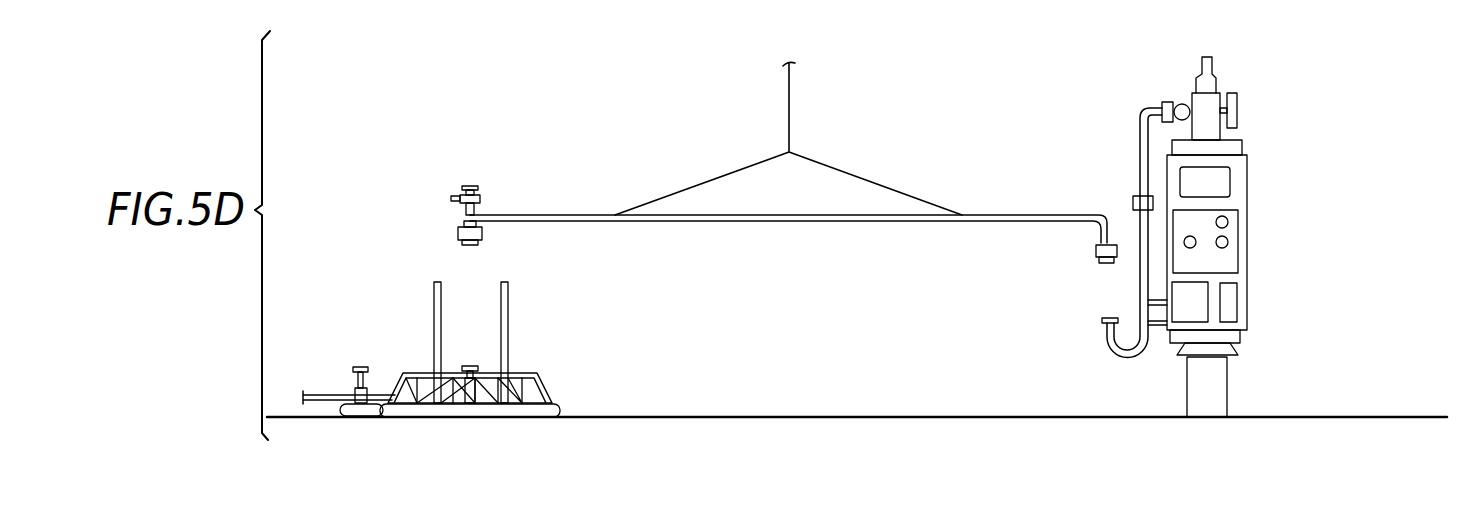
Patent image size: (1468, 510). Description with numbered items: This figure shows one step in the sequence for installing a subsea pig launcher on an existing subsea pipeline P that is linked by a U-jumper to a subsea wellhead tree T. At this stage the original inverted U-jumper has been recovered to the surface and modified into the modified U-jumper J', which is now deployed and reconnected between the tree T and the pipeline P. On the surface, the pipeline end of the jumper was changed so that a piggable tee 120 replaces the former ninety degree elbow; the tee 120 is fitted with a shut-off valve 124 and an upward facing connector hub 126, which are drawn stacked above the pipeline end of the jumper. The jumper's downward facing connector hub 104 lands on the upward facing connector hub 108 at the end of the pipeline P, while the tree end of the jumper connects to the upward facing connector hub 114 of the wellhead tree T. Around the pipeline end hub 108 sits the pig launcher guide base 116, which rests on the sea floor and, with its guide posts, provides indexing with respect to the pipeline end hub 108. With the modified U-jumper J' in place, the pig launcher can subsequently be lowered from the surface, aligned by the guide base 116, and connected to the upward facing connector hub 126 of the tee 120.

The downward facing connector hub 104 is at (459, 237).
The upward facing connector hub 108 is at (470, 365).
The upward facing connector hub 114 is at (1109, 317).
The pig launcher guide base 116 is at (549, 392).
The piggable tee 120 is at (462, 217).
The shut-off valve 124 is at (481, 200).
The upward facing connector hub 126 is at (471, 185).
The pipeline P is at (327, 392).
The modified U-jumper J' is at (793, 212).
The subsea wellhead tree T is at (1250, 243).